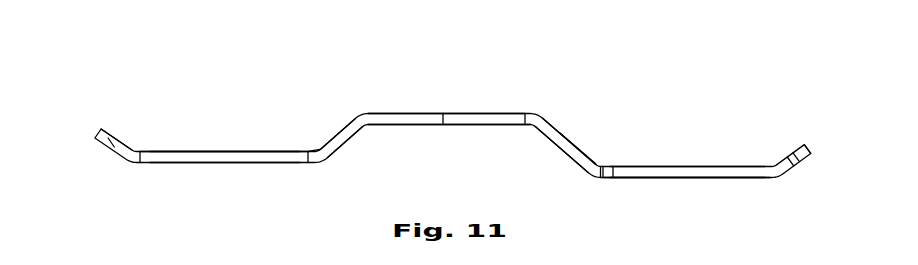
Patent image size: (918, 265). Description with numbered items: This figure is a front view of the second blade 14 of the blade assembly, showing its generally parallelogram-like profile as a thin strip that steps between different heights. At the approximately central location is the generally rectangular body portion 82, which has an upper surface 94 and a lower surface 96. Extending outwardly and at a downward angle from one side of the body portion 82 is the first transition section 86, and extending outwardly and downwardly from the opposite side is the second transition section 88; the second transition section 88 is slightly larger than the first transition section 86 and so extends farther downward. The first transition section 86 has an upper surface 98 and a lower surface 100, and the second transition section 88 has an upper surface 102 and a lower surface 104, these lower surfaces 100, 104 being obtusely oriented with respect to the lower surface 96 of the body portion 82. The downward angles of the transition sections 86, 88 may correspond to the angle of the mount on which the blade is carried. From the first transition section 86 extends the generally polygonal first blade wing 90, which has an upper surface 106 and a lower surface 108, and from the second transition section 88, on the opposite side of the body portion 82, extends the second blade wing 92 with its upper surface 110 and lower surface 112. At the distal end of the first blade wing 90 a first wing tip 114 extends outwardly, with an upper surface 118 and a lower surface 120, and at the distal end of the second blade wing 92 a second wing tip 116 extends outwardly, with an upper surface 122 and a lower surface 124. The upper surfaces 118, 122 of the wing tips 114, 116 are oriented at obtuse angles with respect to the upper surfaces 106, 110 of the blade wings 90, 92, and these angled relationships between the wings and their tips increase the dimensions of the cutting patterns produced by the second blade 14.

The second blade 14 is at (166, 54).
The body portion 82 is at (478, 108).
The first transition section 86 is at (569, 128).
The second transition section 88 is at (340, 122).
The first blade wing 90 is at (687, 188).
The second blade wing 92 is at (220, 170).
The upper surface 94 is at (453, 113).
The lower surface 96 is at (463, 126).
The upper surface 98 is at (578, 148).
The lower surface 100 is at (561, 150).
The upper surface 102 is at (327, 148).
The lower surface 104 is at (342, 141).
The upper surface 106 is at (724, 166).
The lower surface 108 is at (640, 180).
The upper surface 110 is at (253, 152).
The lower surface 112 is at (280, 164).
The first wing tip 114 is at (798, 136).
The second wing tip 116 is at (94, 154).
The upper surface 118 is at (787, 160).
The lower surface 120 is at (801, 165).
The upper surface 122 is at (118, 134).
The lower surface 124 is at (116, 156).